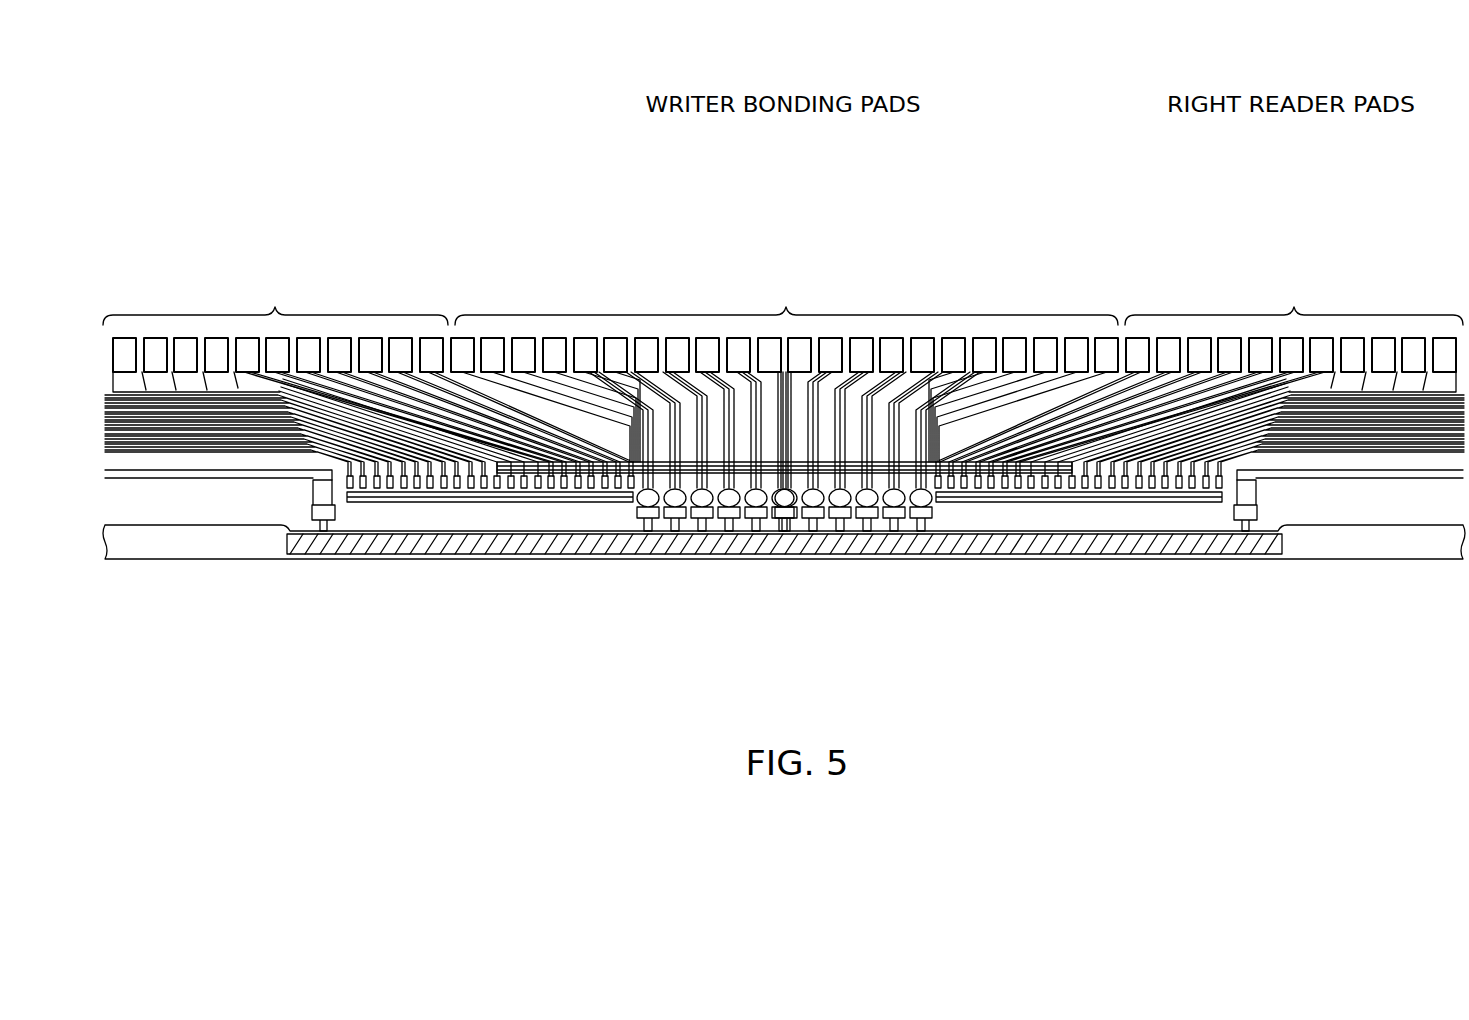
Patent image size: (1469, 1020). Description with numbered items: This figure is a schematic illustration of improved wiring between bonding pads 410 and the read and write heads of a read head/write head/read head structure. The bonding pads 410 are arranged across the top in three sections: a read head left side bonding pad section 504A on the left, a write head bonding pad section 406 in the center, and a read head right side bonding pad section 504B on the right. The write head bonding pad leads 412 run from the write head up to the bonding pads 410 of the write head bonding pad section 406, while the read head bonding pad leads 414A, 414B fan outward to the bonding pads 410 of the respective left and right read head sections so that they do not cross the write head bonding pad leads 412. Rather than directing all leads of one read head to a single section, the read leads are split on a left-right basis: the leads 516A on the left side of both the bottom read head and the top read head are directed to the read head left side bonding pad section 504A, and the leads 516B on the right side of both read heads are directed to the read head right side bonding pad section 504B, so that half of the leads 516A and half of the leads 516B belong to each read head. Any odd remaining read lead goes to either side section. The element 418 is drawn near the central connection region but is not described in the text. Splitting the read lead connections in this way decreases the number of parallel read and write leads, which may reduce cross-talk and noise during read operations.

The bonding pads 410 is at (557, 350).
The write head bonding pad section 406 is at (786, 265).
The read head left side bonding pad section 504A is at (275, 269).
The read head right side bonding pad section 504B is at (1294, 251).
The read head bonding pad leads 414A is at (478, 428).
The read head bonding pad leads 414B is at (1230, 428).
The leads 516A is at (600, 492).
The leads 516B is at (1075, 492).
The write head bonding pad leads 412 is at (655, 378).
The write head solder bump connections 418 is at (917, 440).